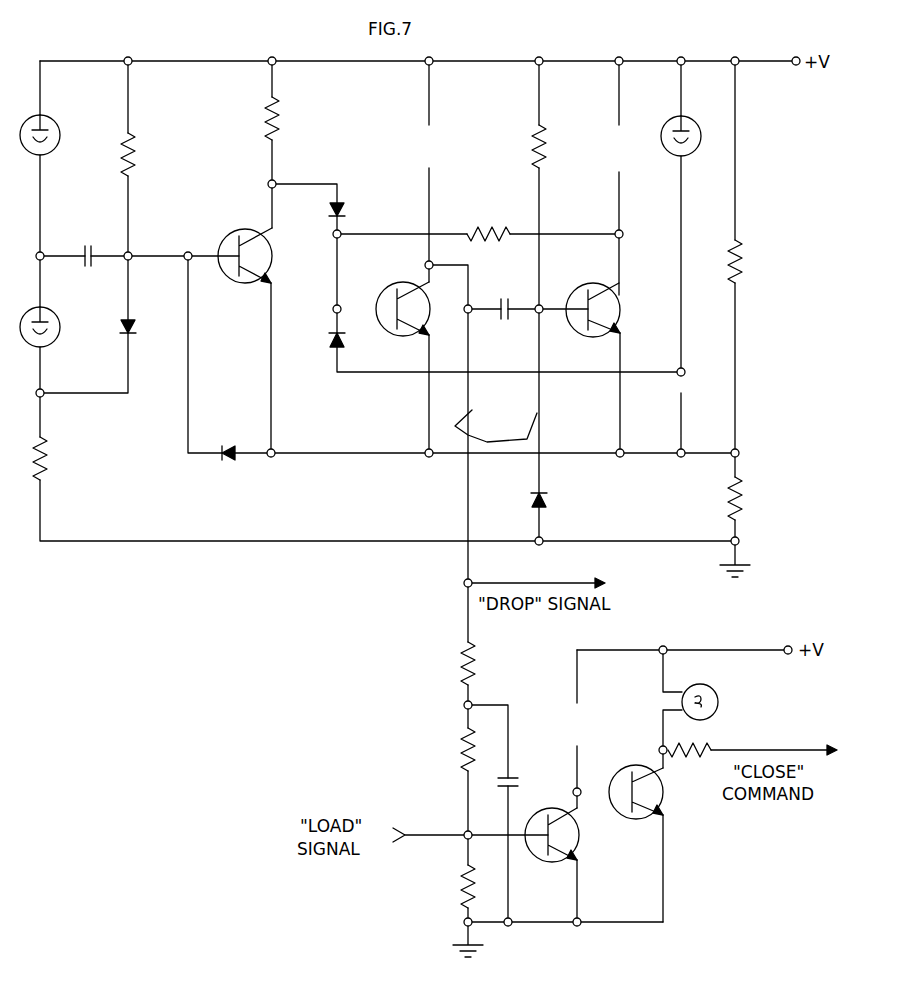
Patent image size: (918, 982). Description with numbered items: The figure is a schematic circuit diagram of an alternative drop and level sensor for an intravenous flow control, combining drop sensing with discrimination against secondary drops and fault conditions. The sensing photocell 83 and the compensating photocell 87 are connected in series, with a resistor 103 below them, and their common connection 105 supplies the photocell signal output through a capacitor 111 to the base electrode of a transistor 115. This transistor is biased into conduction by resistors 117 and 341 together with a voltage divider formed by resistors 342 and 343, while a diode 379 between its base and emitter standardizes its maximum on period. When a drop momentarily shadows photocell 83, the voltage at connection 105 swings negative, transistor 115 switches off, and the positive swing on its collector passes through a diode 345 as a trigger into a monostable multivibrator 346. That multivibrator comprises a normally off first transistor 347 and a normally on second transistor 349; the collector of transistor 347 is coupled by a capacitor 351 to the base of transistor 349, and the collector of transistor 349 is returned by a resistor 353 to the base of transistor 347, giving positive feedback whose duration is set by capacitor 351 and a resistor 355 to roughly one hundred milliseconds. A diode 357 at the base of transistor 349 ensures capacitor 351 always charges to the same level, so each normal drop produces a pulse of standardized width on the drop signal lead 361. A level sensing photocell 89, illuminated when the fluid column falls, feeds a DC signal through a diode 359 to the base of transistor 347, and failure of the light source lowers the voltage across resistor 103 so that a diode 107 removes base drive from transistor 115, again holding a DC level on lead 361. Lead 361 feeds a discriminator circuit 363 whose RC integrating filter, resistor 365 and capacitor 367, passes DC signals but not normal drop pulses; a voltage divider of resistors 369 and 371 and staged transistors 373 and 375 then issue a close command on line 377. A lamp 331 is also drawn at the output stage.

The sensing photocell 83 is at (52, 120).
The compensating photocell 87 is at (57, 336).
The level sensing photocell 89 is at (666, 152).
The resistor 103 is at (52, 463).
The connection (photocell terminal) 105 is at (47, 251).
The diode 107 is at (136, 337).
The capacitor 111 is at (88, 268).
The transistor 115 is at (227, 238).
The resistor 117 is at (136, 161).
The lamp 331 is at (719, 701).
The resistor 341 is at (280, 123).
The resistor 342 is at (745, 253).
The resistor 343 is at (749, 498).
The diode 345 is at (345, 213).
The monostable multivibrator 346 is at (412, 380).
The first transistor 347 is at (378, 294).
The second transistor 349 is at (575, 291).
The capacitor 351 is at (503, 297).
The resistor 353 is at (487, 228).
The resistor 355 is at (548, 148).
The diode 357 is at (549, 488).
The diode 359 is at (326, 341).
The drop signal lead 361 is at (466, 568).
The discriminator circuit 363 is at (458, 696).
The resistor (RC integrating filter) 365 is at (478, 669).
The capacitor (RC integrating filter) 367 is at (520, 786).
The resistor (voltage divider) 369 is at (462, 745).
The resistor (voltage divider) 371 is at (462, 880).
The transistor 373 is at (579, 829).
The transistor 375 is at (612, 767).
The close command line 377 is at (786, 748).
The diode 379 is at (232, 442).